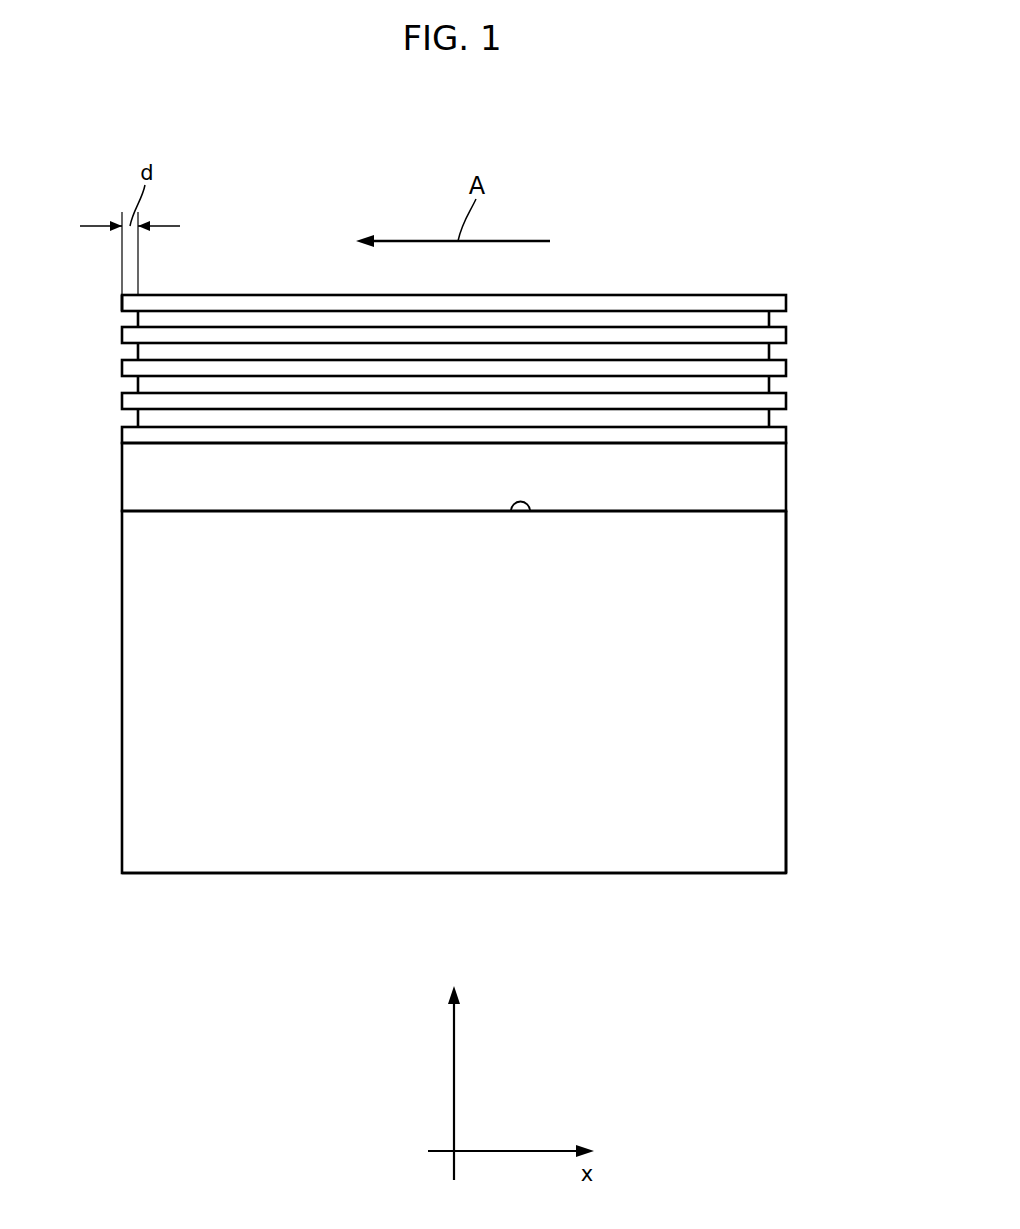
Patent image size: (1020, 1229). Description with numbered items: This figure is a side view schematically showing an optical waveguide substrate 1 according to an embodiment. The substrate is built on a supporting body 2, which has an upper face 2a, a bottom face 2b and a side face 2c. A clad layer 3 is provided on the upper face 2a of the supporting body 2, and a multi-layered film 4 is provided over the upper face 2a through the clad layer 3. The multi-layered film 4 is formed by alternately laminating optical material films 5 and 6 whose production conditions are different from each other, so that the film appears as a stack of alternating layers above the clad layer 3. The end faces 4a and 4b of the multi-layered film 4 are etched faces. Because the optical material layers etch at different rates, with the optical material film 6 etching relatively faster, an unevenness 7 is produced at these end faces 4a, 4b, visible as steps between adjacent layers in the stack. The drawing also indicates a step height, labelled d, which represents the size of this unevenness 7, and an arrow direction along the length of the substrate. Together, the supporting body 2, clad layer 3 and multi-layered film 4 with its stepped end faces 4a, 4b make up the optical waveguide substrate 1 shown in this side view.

The optical waveguide substrate 1 is at (769, 254).
The supporting body 2 is at (762, 677).
The upper face 2a is at (528, 512).
The bottom face 2b is at (714, 875).
The side face 2c is at (787, 775).
The clad layer 3 is at (762, 493).
The multi-layered film 4 is at (474, 355).
The end face 4a is at (788, 302).
The end face 4b is at (122, 304).
The optical material film 5 is at (782, 405).
The optical material film 6 is at (762, 350).
The unevenness 7 is at (130, 378).